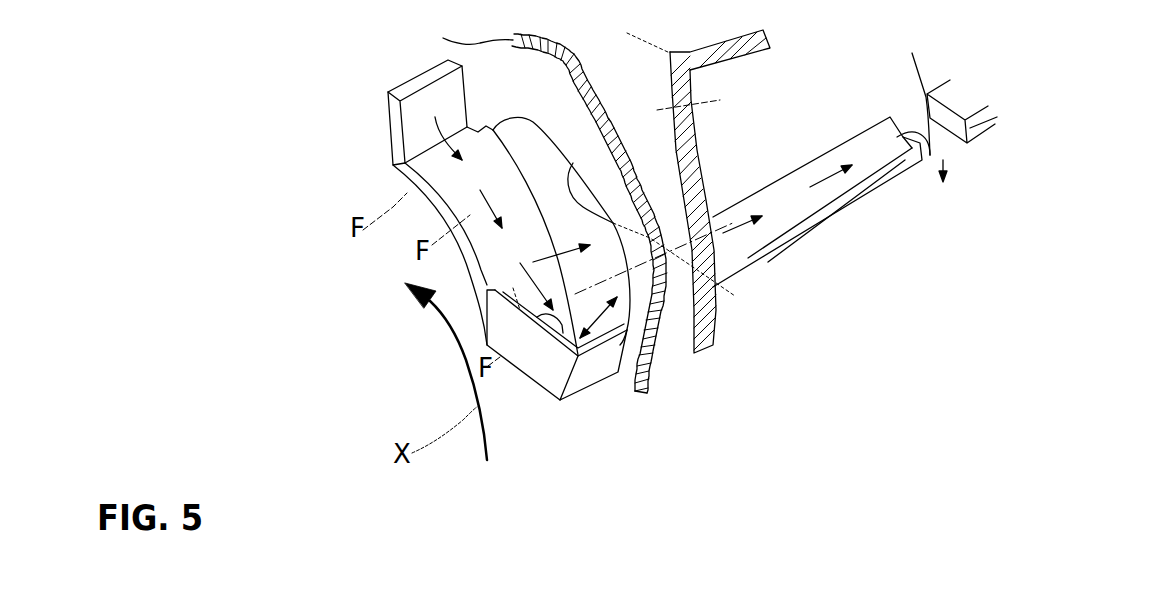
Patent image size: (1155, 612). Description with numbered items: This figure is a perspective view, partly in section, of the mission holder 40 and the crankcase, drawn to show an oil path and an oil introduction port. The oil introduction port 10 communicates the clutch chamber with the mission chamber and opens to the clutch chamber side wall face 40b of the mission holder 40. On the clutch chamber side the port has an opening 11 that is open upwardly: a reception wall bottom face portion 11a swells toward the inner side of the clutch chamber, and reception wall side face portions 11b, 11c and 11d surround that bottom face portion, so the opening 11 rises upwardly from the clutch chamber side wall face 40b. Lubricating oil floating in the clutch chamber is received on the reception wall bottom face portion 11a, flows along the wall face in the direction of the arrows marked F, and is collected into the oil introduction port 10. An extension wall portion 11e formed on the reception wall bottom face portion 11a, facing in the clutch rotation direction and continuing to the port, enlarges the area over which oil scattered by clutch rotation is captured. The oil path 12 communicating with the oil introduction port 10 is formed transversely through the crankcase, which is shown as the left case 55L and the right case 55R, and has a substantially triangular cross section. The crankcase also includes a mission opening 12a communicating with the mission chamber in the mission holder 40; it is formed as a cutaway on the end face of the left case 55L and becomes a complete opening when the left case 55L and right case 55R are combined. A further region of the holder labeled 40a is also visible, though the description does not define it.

The oil introduction port 10 is at (700, 275).
The opening 11 is at (528, 316).
The reception wall bottom face portion 11a is at (507, 335).
The reception wall side face portion 11b is at (602, 372).
The reception wall side face portion 11c is at (550, 383).
The reception wall side face portion 11d is at (507, 302).
The extension wall portion 11e is at (410, 232).
The oil path 12 is at (885, 225).
The mission opening 12a is at (947, 147).
The mission holder 40 is at (567, 202).
The right arm of clamp 40a is at (913, 187).
The clutch chamber side wall face 40b is at (370, 138).
The left case 55L is at (690, 98).
The right case 55R is at (993, 145).